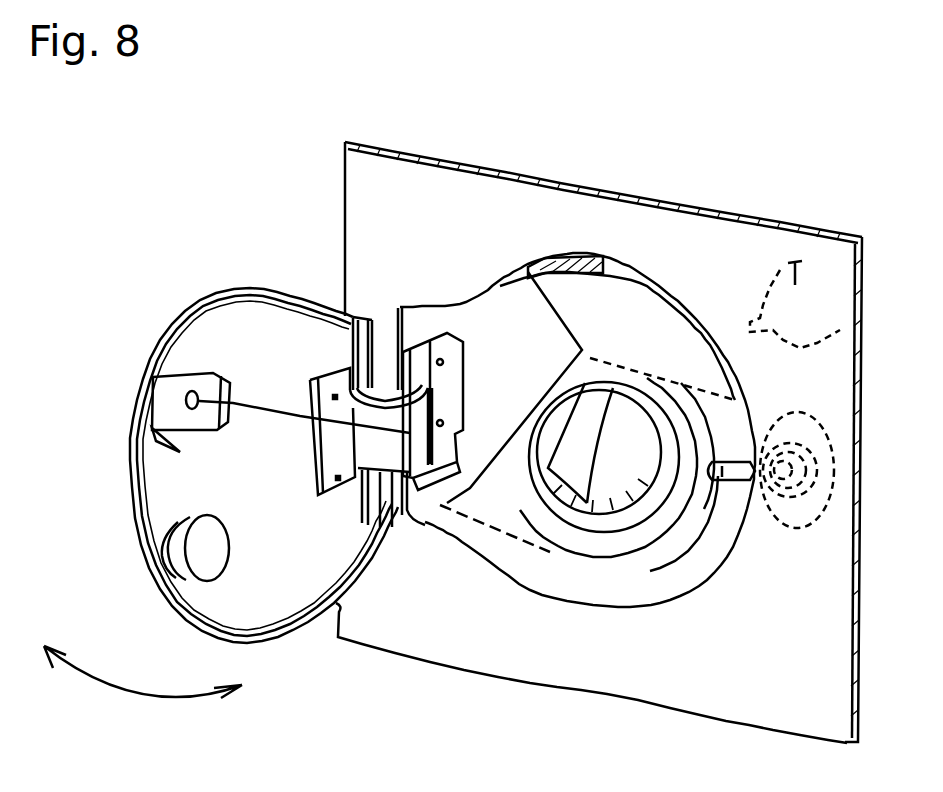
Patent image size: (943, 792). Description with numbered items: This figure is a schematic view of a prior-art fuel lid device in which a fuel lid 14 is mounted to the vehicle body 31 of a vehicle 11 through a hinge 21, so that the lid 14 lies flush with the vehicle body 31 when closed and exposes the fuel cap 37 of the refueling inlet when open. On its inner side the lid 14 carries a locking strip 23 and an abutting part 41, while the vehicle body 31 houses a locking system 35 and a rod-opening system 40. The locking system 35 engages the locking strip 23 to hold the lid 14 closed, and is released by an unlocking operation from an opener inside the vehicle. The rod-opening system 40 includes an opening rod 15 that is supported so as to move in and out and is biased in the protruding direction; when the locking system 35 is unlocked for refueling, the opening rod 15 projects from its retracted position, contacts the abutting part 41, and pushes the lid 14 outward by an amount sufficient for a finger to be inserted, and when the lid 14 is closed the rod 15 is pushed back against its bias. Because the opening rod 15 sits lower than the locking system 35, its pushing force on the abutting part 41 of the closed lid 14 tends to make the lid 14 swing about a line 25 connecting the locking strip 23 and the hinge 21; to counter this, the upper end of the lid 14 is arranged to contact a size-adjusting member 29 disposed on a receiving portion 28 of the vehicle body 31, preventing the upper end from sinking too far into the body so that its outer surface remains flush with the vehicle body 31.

The vehicle 11 is at (413, 180).
The fuel lid 14 is at (251, 290).
The opening rod 15 is at (726, 500).
The hinge 21 is at (393, 523).
The locking strip 23 is at (172, 382).
The line 25 is at (269, 413).
The receiving portion 28 is at (623, 262).
The size-adjusting member 29 is at (563, 258).
The vehicle body 31 is at (502, 332).
The locking system 35 is at (800, 262).
The fuel cap 37 is at (600, 493).
The rod-opening system 40 is at (835, 510).
The abutting part 41 is at (213, 567).